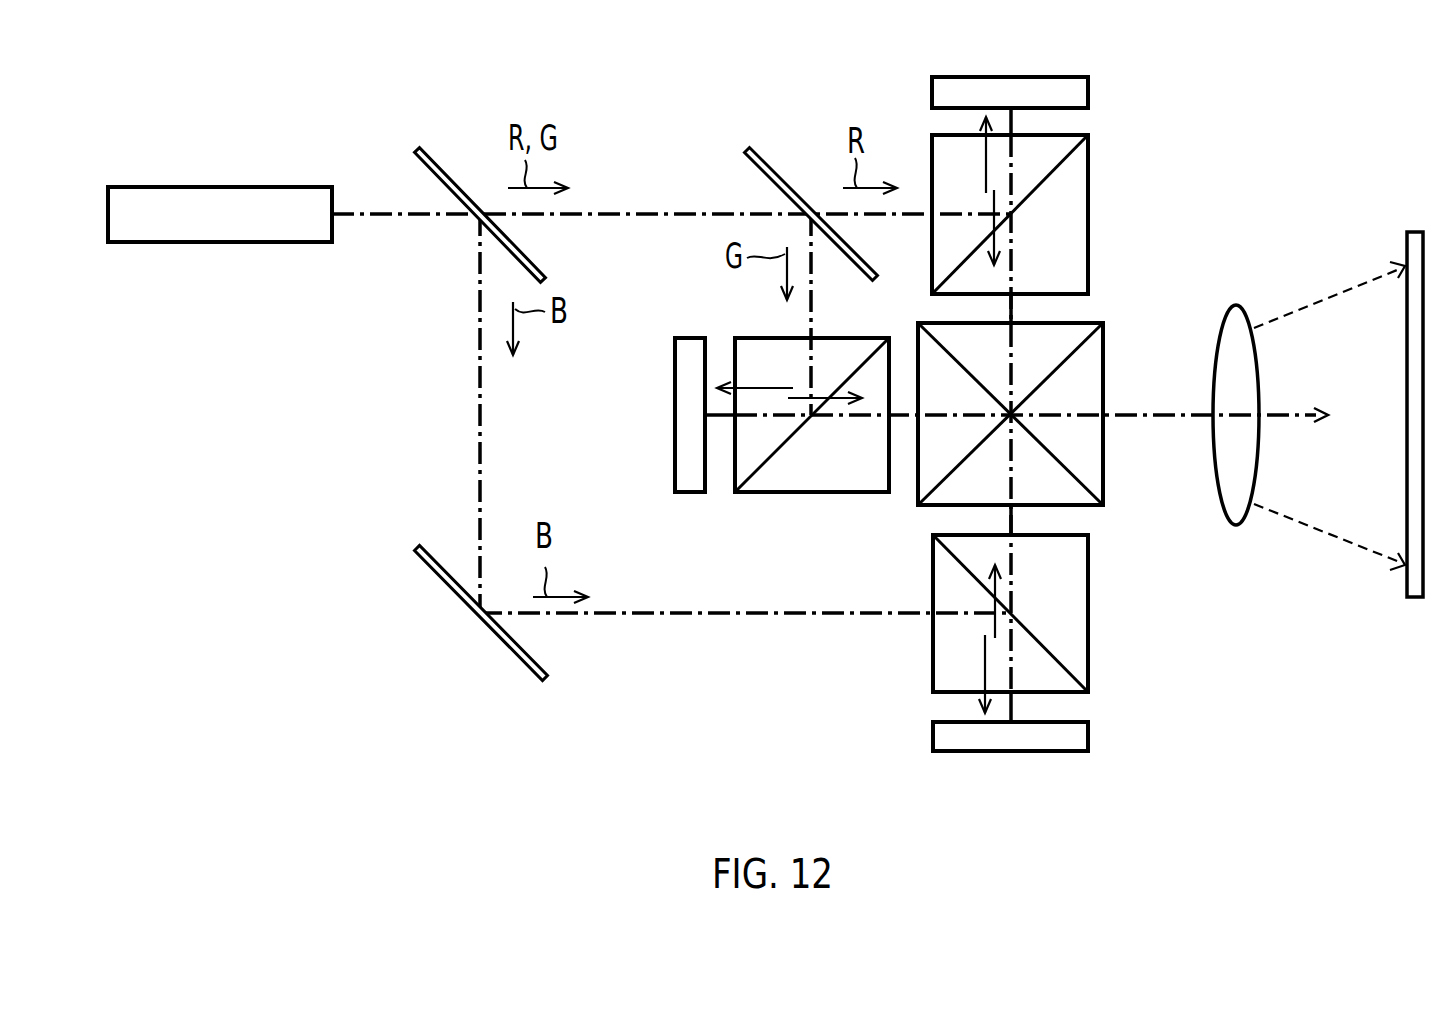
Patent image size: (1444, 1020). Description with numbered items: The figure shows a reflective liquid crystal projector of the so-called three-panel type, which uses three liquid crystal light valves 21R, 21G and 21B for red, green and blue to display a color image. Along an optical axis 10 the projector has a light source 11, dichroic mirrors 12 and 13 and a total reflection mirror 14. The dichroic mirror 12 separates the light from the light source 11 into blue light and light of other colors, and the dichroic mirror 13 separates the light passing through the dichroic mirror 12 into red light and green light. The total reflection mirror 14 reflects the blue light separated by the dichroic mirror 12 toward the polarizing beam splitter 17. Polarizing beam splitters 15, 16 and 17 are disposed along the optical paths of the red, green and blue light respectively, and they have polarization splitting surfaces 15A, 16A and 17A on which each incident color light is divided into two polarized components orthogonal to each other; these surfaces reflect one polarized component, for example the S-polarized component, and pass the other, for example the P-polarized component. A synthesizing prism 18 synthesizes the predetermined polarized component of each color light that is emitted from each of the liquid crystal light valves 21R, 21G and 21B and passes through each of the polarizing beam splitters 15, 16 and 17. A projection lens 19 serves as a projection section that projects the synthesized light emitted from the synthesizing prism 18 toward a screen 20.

The optical axis 10 is at (403, 222).
The light source 11 is at (309, 187).
The dichroic mirror 12 is at (436, 152).
The dichroic mirror 13 is at (766, 155).
The total reflection mirror 14 is at (436, 551).
The polarizing beam splitter 15 is at (1088, 205).
The polarization splitting surface 15A is at (1072, 155).
The polarizing beam splitter 16 is at (862, 492).
The polarization splitting surface 16A is at (757, 472).
The polarizing beam splitter 17 is at (1088, 580).
The polarization splitting surface 17A is at (1062, 659).
The synthesizing prism 18 is at (1103, 352).
The projection lens 19 is at (1240, 310).
The screen 20 is at (1416, 232).
The liquid crystal light valve 21R is at (1088, 92).
The liquid crystal light valve 21G is at (690, 492).
The liquid crystal light valve 21B is at (1088, 736).